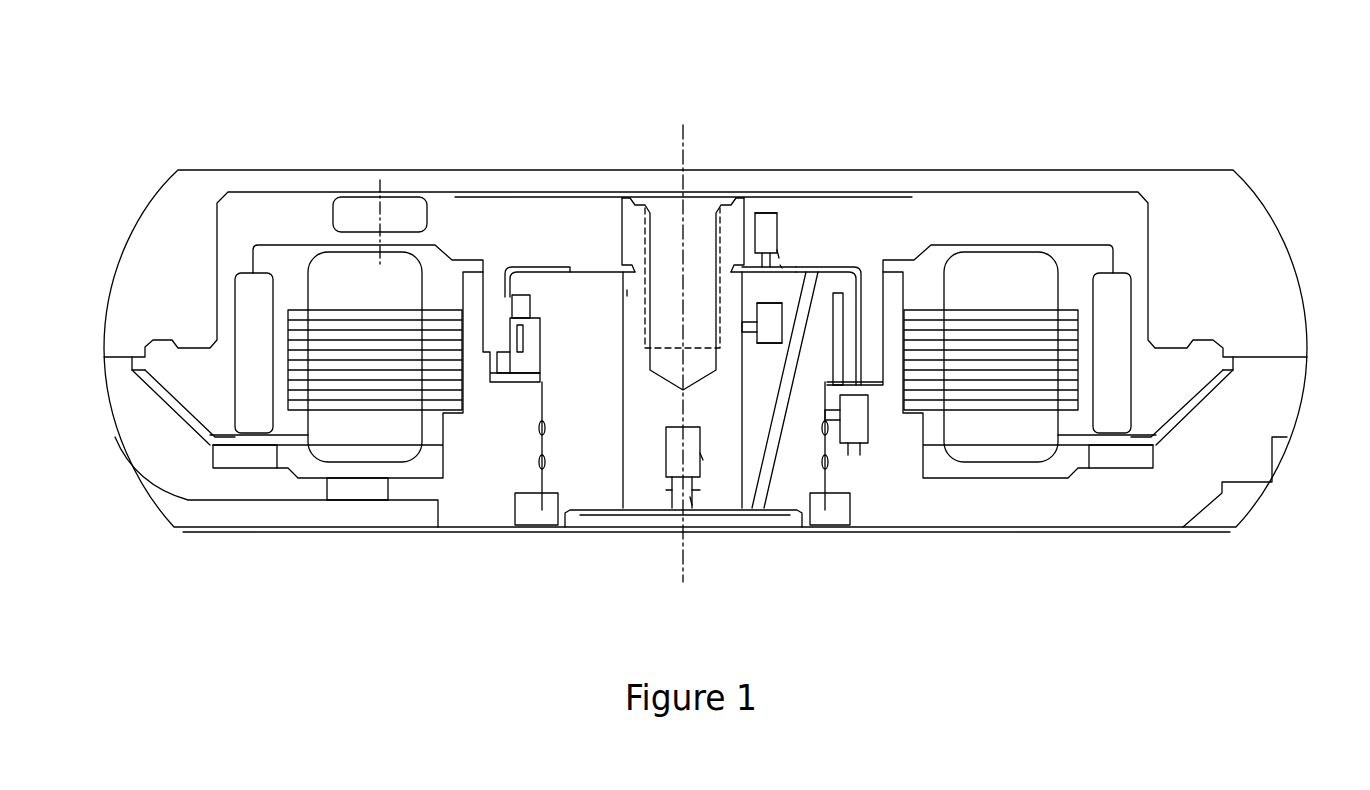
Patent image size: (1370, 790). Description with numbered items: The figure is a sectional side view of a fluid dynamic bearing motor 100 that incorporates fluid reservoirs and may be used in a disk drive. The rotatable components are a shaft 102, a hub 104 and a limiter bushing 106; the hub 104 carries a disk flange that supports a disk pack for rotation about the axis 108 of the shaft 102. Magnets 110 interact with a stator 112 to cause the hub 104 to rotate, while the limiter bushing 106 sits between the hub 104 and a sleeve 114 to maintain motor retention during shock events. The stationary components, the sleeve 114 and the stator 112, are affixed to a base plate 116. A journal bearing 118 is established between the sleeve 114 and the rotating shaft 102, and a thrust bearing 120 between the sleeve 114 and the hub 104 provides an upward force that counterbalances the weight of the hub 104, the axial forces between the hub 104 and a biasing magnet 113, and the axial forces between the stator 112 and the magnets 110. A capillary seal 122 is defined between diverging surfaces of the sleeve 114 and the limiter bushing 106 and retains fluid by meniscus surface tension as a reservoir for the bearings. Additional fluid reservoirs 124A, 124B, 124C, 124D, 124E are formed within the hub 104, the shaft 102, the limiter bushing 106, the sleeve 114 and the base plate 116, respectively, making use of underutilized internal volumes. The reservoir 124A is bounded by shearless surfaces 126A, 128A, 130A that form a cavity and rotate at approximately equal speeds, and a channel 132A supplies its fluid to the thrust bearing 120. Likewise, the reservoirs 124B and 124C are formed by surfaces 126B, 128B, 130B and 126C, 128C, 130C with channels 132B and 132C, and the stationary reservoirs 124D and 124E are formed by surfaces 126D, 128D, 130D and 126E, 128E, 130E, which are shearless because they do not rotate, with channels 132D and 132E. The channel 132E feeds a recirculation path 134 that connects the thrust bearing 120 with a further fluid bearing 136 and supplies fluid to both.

The FDB motor 100 is at (1252, 66).
The shaft 102 is at (710, 497).
The hub 104 is at (993, 203).
The limiter bushing 106 is at (517, 300).
The axis 108 is at (680, 145).
The magnets 110 is at (242, 297).
The stator 112 is at (348, 442).
The biasing magnet 113 is at (242, 460).
The sleeve 114 is at (585, 468).
The base plate 116 is at (472, 483).
The journal bearing 118 is at (593, 262).
The thrust bearing 120 is at (573, 270).
The capillary seal 122 is at (544, 493).
The fluid reservoir 124A is at (760, 213).
The fluid reservoir 124B is at (670, 477).
The fluid reservoir 124C is at (502, 357).
The fluid reservoir 124D is at (627, 293).
The fluid reservoir 124E is at (833, 420).
The surface 126A is at (757, 250).
The surface 126B is at (665, 463).
The surface 126C is at (518, 363).
The surface 126D is at (770, 300).
The surface 126E is at (868, 440).
The surface 128A is at (773, 213).
The surface 128B is at (673, 420).
The surface 128C is at (508, 375).
The surface 128D is at (783, 322).
The surface 128E is at (870, 427).
The surface 130A is at (778, 258).
The surface 130B is at (702, 453).
The surface 130C is at (492, 367).
The surface 130D is at (763, 347).
The surface 130E is at (858, 380).
The channel 132A is at (782, 268).
The channel 132B is at (692, 497).
The channel 132C is at (518, 302).
The channel 132D is at (758, 322).
The channel 132E is at (860, 427).
The recirculation path 134 is at (780, 430).
The fluid bearing 136 is at (750, 512).